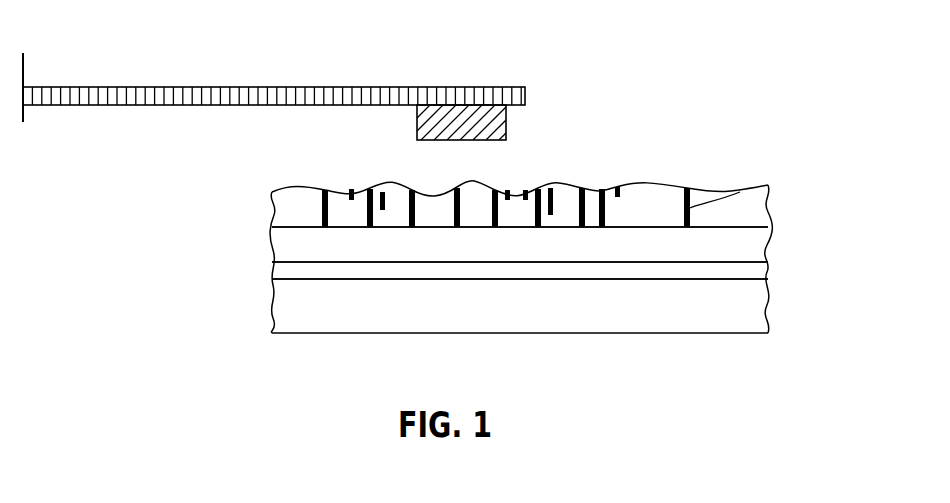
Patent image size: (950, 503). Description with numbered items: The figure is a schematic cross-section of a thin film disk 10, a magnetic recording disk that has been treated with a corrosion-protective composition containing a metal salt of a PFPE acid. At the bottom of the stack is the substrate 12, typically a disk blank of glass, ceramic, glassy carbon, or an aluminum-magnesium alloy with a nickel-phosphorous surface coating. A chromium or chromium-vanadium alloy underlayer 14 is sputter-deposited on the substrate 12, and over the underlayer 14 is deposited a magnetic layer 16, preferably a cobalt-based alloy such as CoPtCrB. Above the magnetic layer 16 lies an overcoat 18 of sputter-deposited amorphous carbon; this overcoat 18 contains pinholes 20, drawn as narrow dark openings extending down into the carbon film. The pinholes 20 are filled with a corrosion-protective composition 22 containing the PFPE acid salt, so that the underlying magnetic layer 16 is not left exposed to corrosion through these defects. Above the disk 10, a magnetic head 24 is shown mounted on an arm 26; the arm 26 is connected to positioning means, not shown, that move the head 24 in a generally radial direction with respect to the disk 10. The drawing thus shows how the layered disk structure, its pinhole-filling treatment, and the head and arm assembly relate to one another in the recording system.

The thin film disk 10 is at (752, 135).
The substrate 12 is at (765, 310).
The underlayer 14 is at (760, 270).
The magnetic layer 16 is at (765, 243).
The overcoat 18 is at (770, 210).
The pinholes 20 is at (320, 211).
The corrosion-protective composition 22 is at (690, 208).
The magnetic head 24 is at (506, 125).
The arm 26 is at (253, 87).